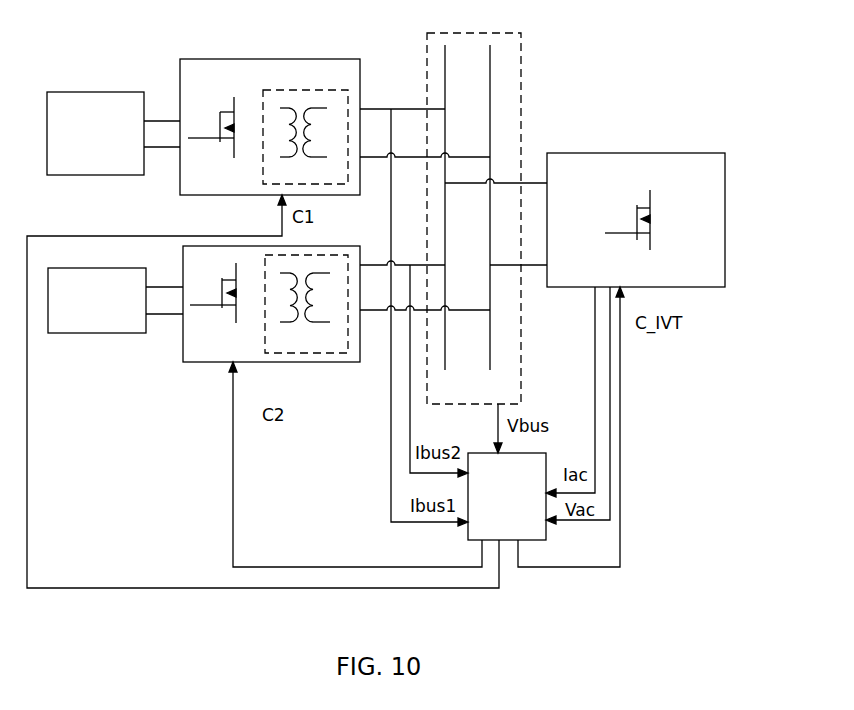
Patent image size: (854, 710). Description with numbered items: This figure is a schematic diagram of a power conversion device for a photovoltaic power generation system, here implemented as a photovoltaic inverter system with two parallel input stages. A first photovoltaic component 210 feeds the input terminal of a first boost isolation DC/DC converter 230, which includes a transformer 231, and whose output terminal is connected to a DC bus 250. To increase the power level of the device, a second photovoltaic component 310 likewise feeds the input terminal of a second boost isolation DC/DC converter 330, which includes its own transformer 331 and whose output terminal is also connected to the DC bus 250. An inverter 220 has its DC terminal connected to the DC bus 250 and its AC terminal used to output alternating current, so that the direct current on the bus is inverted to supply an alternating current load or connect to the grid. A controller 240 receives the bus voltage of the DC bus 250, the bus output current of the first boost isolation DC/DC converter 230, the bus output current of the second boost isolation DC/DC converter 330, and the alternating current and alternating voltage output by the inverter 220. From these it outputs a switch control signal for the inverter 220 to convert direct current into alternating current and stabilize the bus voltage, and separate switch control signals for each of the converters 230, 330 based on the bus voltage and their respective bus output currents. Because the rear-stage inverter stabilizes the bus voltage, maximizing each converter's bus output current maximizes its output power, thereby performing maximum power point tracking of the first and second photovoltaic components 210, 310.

The first photovoltaic component 210 is at (90, 168).
The first boost isolation DC/DC converter 230 is at (227, 188).
The transformer 231 is at (330, 178).
The second photovoltaic component 310 is at (90, 328).
The second boost isolation DC/DC converter 330 is at (229, 356).
The transformer 331 is at (330, 346).
The DC bus 250 is at (513, 394).
The inverter 220 is at (598, 280).
The controller 240 is at (538, 534).